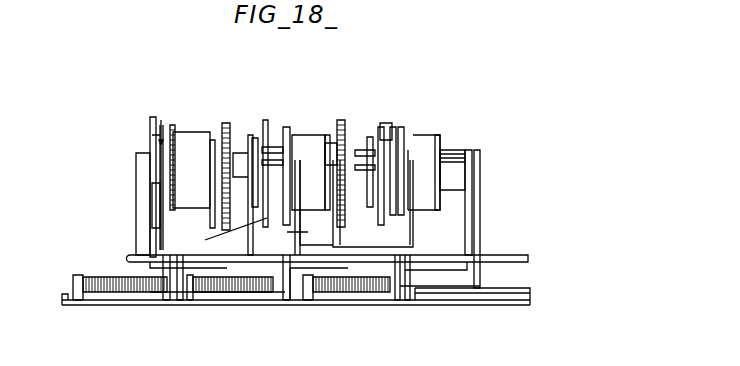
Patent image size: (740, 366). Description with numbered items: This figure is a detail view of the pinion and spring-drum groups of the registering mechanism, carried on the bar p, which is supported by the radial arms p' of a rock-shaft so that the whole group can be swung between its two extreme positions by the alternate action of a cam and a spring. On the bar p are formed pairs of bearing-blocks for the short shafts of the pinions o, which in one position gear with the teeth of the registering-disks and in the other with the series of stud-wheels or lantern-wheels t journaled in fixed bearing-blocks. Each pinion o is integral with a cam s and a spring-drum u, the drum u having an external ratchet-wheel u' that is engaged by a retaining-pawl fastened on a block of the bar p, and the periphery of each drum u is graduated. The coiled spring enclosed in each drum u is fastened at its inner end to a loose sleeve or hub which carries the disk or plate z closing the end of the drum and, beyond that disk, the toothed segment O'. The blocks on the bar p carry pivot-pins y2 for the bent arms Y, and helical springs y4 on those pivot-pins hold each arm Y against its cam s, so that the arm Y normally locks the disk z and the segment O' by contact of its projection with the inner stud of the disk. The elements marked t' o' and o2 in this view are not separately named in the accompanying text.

The cam s is at (392, 140).
The ratchet-wheel u' is at (298, 151).
The spring-drum u is at (306, 159).
The disk or plate z is at (440, 132).
The threaded rod t' is at (288, 157).
The stud-wheel or lantern-wheel t is at (368, 169).
The bracket o' is at (333, 134).
The pinion o is at (232, 159).
The plate o2 is at (131, 204).
The toothed segment O' is at (466, 203).
The bent arm Y is at (395, 226).
The pivot-pin y2 is at (229, 300).
The helical spring y4 is at (240, 311).
The radial arm p' is at (317, 305).
The bar p is at (296, 310).